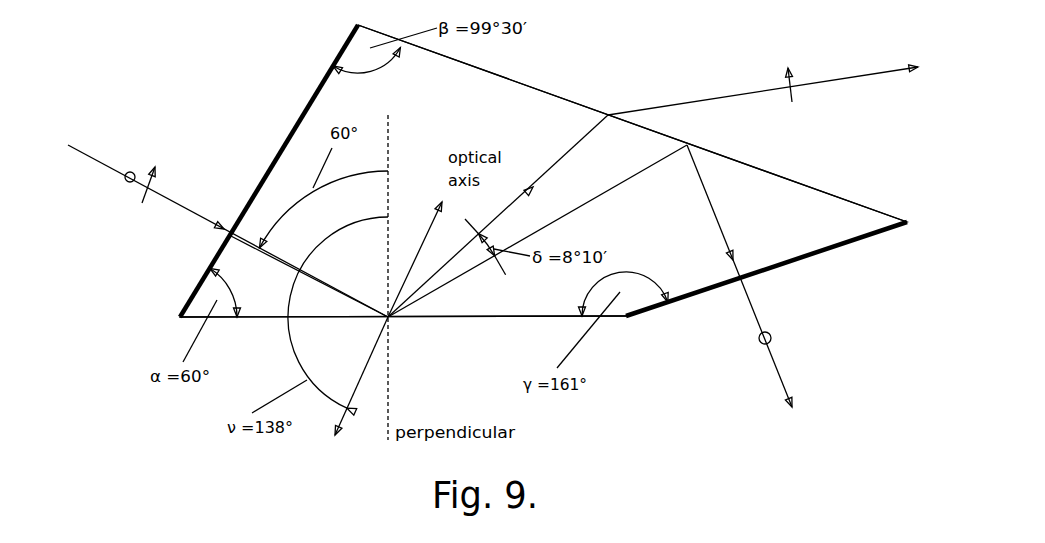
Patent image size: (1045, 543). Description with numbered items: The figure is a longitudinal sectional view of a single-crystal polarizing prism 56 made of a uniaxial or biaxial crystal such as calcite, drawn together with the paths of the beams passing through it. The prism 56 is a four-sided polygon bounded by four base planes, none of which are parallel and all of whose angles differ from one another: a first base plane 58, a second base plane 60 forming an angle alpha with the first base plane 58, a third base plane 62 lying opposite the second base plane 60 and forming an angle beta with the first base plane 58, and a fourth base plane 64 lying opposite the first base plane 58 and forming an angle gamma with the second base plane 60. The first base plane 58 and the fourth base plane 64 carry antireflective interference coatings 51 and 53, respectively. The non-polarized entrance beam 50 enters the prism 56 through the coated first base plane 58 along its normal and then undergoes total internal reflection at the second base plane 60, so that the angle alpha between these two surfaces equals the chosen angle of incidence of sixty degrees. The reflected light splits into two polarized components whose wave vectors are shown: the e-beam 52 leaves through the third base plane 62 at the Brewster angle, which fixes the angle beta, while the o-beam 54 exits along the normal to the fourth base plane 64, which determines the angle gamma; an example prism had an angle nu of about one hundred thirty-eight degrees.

The entrance beam 50 is at (90, 150).
The antireflective interference coating 51 is at (210, 260).
The e-beam 52 is at (723, 97).
The antireflective interference coating 53 is at (822, 253).
The o-beam 54 is at (750, 300).
The prism 56 is at (562, 68).
The first base plane 58 is at (229, 236).
The second base plane 60 is at (469, 318).
The third base plane 62 is at (817, 190).
The fourth base plane 64 is at (840, 245).